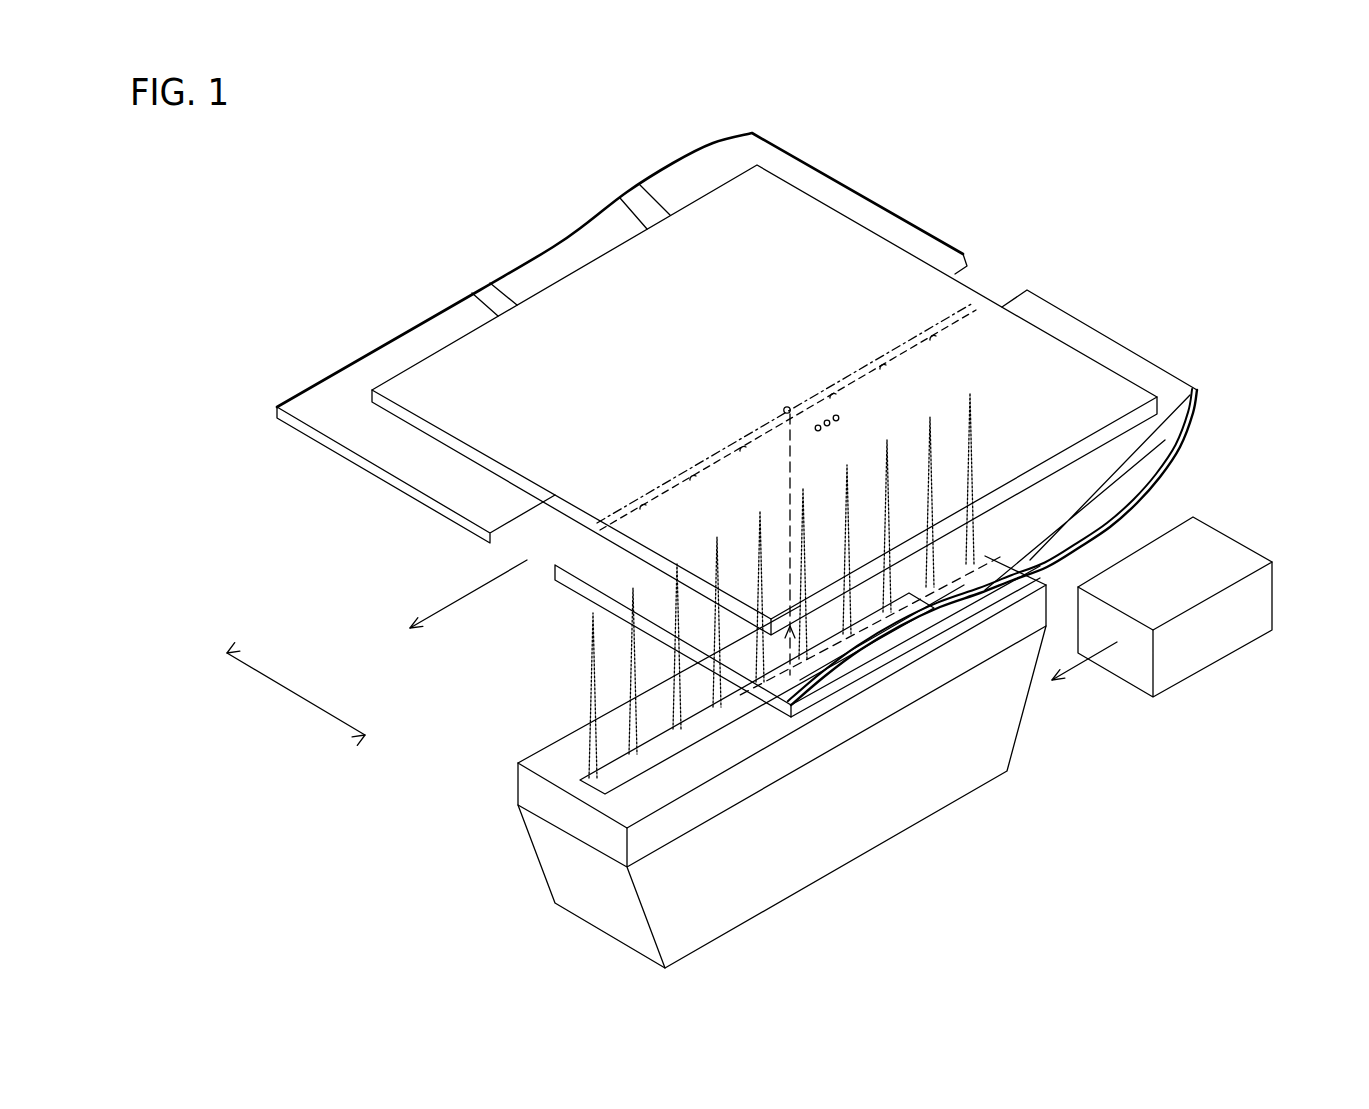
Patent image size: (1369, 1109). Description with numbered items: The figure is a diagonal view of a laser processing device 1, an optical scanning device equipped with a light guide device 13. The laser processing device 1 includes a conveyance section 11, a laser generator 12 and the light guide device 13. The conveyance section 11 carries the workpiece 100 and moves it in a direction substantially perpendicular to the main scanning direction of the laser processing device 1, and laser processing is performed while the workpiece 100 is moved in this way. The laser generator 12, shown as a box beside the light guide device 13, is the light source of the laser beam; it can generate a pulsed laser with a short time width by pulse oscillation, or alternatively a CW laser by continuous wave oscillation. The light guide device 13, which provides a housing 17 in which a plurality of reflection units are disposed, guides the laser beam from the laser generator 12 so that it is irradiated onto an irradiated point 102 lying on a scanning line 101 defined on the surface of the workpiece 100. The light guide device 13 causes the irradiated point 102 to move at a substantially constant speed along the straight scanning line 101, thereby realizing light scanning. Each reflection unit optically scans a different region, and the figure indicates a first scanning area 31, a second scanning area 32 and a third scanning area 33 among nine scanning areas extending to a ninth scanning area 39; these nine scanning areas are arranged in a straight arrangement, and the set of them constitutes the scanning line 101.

The laser processing device 1 is at (165, 241).
The conveyance section 11 is at (312, 457).
The laser generator 12 is at (1213, 643).
The light guide device 13 is at (912, 846).
The housing 17 is at (537, 762).
The first scanning area 31 is at (906, 375).
The second scanning area 32 is at (883, 390).
The third scanning area 33 is at (857, 407).
The ninth scanning area 39 is at (613, 517).
The workpiece 100 is at (583, 308).
The scanning line 101 is at (870, 360).
The irradiated point 102 is at (784, 406).